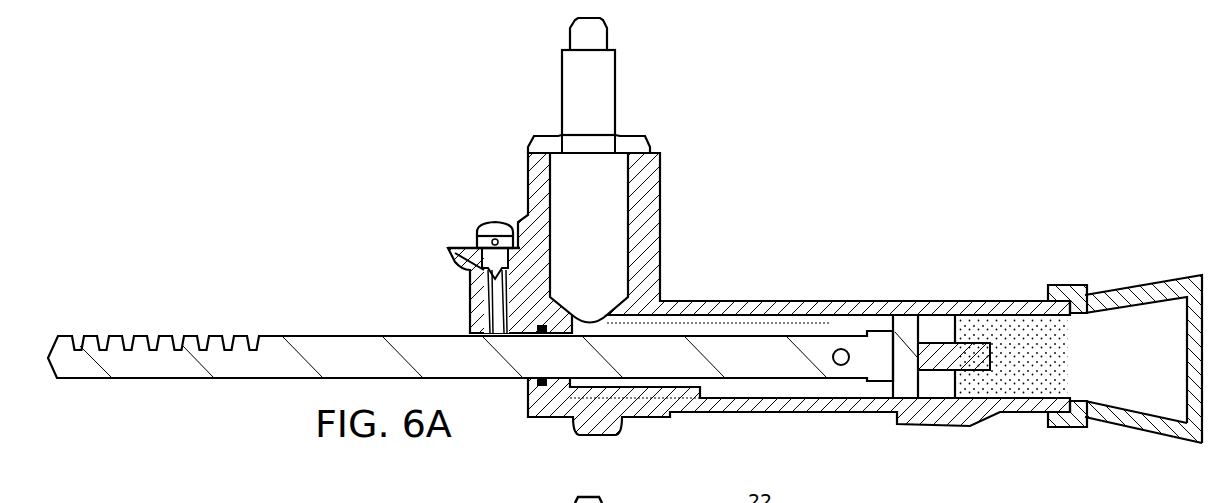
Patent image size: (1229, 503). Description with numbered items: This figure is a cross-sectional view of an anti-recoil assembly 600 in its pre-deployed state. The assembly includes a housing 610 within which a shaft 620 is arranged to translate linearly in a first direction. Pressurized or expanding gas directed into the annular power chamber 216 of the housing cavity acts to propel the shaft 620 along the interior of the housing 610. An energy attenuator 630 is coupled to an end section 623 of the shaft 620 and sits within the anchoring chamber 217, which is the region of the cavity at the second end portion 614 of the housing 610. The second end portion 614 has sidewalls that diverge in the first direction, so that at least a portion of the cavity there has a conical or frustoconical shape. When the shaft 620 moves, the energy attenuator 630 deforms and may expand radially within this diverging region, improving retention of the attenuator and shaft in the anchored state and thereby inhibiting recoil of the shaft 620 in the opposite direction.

The anti-recoil assembly 600 is at (229, 180).
The housing 610 is at (775, 311).
The shaft 620 is at (353, 358).
The annular power chamber 216 is at (828, 331).
The end section 623 is at (940, 356).
The energy attenuator 630 is at (1045, 336).
The anchoring chamber 217 is at (1122, 319).
The second end portion 614 is at (1160, 421).